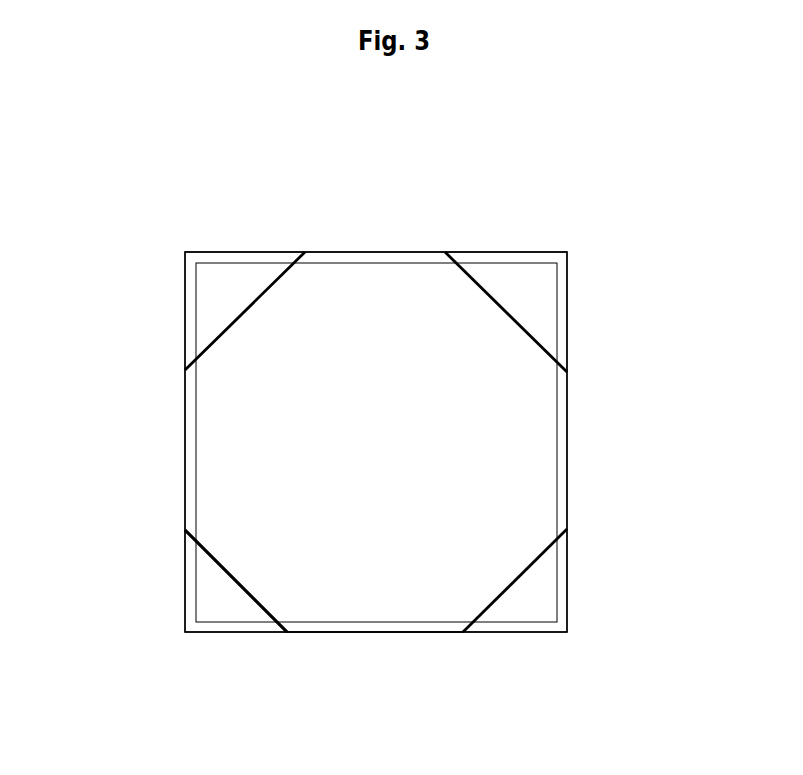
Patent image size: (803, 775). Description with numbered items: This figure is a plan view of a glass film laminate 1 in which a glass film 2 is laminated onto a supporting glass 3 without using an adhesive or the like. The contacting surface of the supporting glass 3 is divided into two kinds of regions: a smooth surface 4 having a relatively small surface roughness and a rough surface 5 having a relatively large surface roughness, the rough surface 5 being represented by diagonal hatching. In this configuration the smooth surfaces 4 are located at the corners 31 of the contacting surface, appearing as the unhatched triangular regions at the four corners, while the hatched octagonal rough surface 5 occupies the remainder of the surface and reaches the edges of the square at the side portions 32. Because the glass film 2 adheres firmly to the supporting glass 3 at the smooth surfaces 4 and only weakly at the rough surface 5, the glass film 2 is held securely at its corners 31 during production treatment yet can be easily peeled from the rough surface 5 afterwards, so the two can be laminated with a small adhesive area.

The glass film laminate 1 is at (558, 218).
The glass film 2 is at (273, 272).
The supporting glass 3 is at (192, 293).
The corners 31 is at (185, 252).
The side portions 32 is at (365, 265).
The smooth surface 4 is at (207, 572).
The rough surface 5 is at (325, 595).